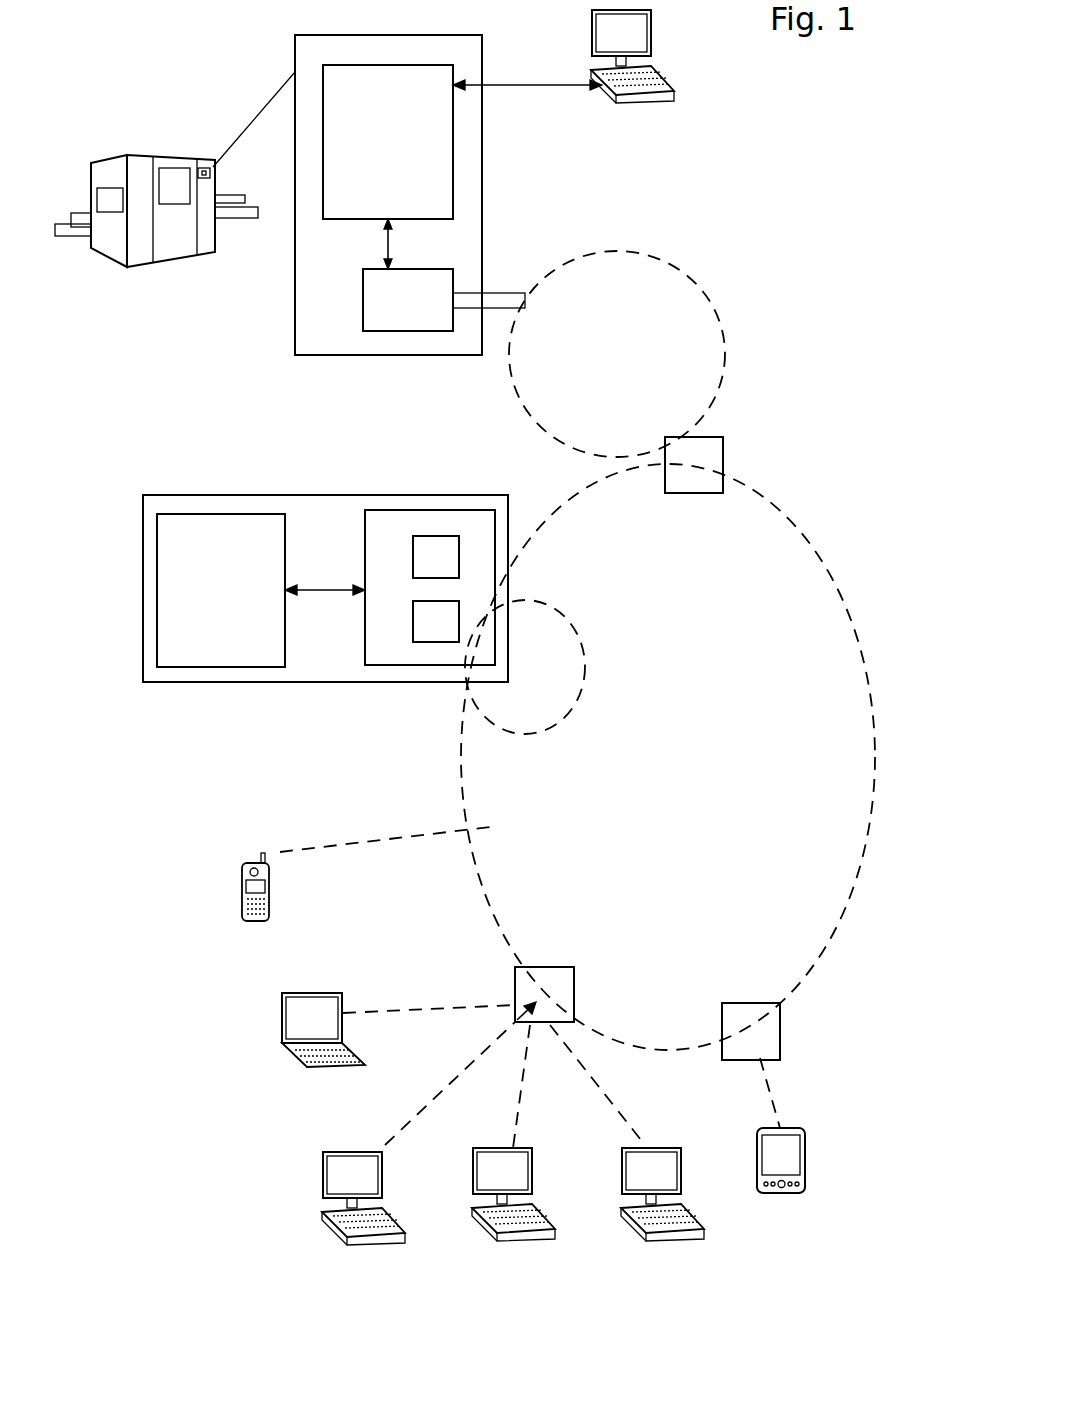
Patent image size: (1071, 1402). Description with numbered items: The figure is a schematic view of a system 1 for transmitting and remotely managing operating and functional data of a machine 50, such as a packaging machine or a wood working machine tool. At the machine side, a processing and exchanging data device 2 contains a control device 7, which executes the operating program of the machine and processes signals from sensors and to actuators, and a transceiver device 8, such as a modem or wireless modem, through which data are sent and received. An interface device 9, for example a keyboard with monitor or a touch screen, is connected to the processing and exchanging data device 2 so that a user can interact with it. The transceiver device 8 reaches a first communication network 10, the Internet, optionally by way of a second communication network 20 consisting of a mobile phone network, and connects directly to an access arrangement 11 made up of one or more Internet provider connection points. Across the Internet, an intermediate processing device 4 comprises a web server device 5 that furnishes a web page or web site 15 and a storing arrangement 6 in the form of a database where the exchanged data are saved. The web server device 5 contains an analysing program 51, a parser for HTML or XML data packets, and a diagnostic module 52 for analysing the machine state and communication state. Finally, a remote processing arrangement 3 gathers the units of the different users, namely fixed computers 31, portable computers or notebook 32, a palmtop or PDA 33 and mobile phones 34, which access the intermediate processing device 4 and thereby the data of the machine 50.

The system 1 is at (200, 68).
The processing and exchanging data device 2 is at (287, 275).
The remote processing arrangement 3 is at (195, 1200).
The intermediate processing device 4 is at (205, 690).
The web server device 5 is at (390, 527).
The storing arrangement 6 is at (185, 607).
The control device 7 is at (427, 192).
The transceiver device 8 is at (435, 284).
The interface device 9 is at (640, 33).
The first communication network 10 is at (800, 593).
The access arrangement 11 is at (715, 457).
The web page or web site 15 is at (528, 718).
The second communication network 20 is at (675, 323).
The fixed computers 31 is at (340, 1174).
The portable computers or notebook 32 is at (305, 1025).
The palmtop or PDA 33 is at (790, 1160).
The mobile phones 34 is at (255, 888).
The machine 50 is at (105, 247).
The analysing program 51 is at (427, 546).
The diagnostic module 52 is at (428, 627).